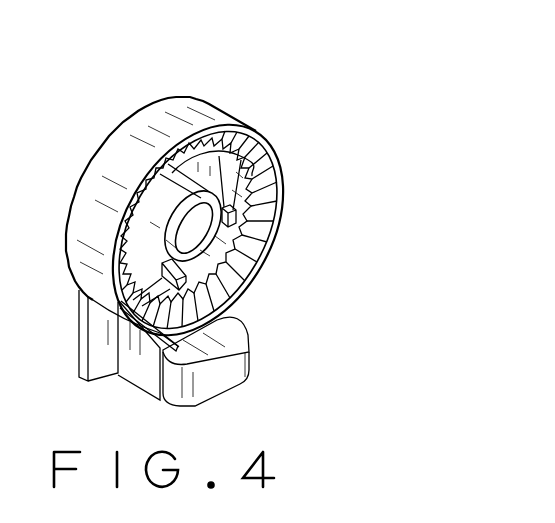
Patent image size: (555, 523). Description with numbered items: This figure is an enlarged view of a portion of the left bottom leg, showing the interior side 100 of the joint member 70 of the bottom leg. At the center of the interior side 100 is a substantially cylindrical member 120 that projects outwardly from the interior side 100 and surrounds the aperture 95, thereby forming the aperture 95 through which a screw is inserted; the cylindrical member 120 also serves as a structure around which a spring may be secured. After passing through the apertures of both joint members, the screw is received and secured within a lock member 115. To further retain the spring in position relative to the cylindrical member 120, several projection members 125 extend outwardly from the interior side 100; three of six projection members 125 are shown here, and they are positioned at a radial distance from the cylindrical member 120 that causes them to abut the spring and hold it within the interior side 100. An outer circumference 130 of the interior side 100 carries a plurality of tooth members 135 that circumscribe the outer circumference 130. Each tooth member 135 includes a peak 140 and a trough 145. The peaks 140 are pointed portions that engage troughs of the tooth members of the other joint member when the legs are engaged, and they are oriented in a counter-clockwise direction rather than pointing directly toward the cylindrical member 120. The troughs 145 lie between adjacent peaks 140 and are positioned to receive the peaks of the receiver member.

The joint member 70 is at (292, 129).
The aperture 95 is at (258, 236).
The interior side 100 is at (237, 168).
The lock member 115 is at (1, 61).
The cylindrical member 120 is at (178, 192).
The projection members 125 is at (249, 158).
The outer circumference 130 is at (129, 212).
The tooth members 135 is at (258, 221).
The peak 140 is at (242, 286).
The trough 145 is at (240, 266).